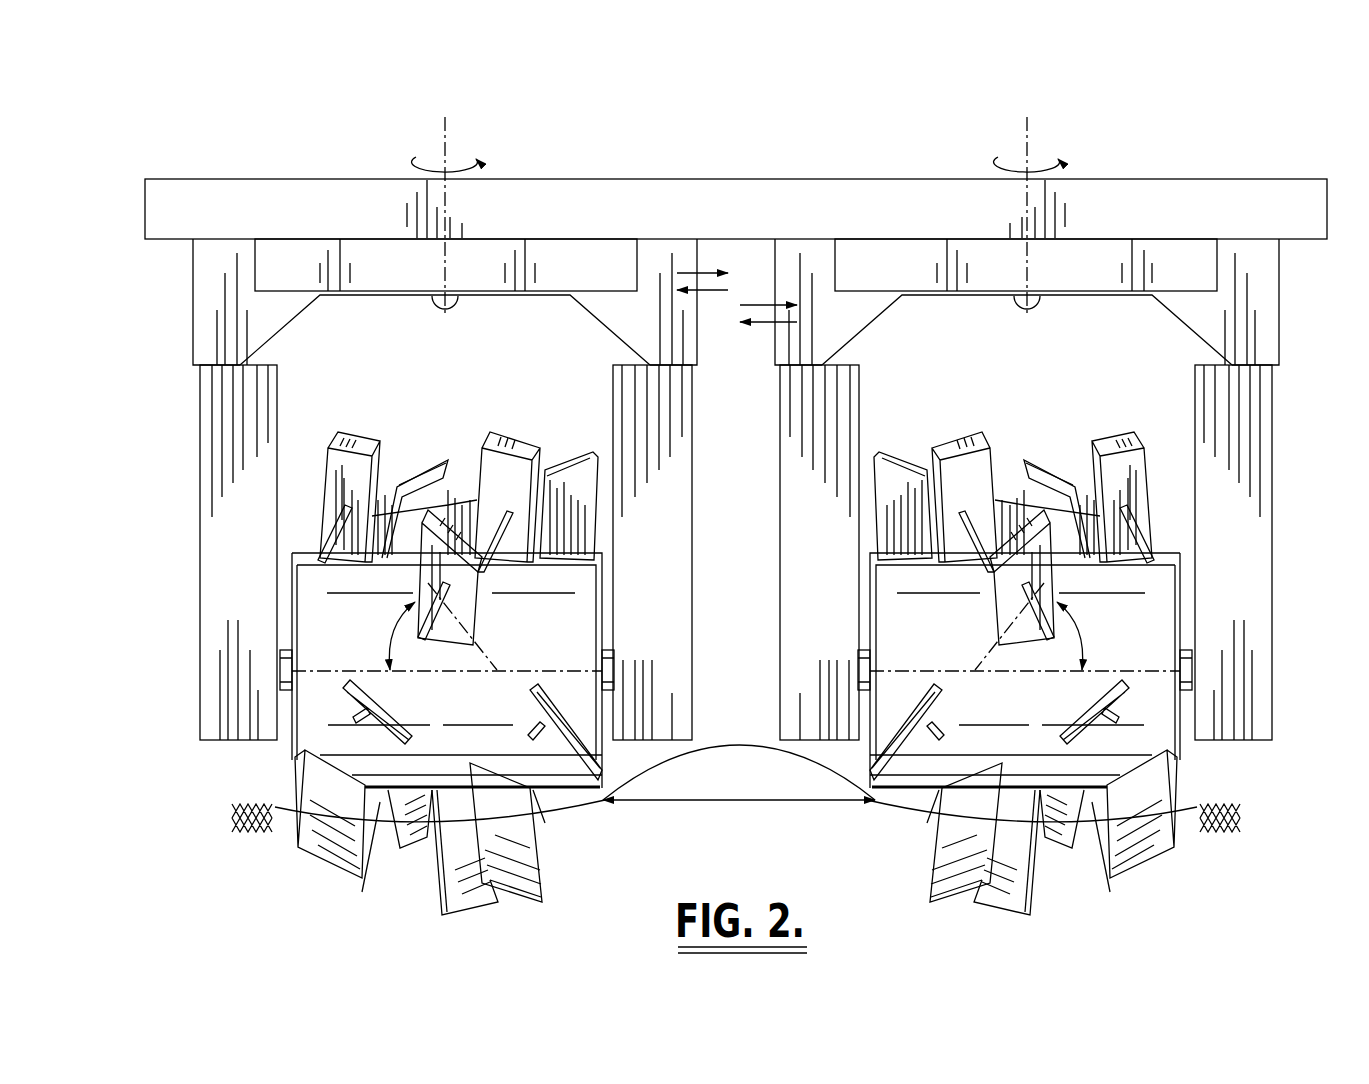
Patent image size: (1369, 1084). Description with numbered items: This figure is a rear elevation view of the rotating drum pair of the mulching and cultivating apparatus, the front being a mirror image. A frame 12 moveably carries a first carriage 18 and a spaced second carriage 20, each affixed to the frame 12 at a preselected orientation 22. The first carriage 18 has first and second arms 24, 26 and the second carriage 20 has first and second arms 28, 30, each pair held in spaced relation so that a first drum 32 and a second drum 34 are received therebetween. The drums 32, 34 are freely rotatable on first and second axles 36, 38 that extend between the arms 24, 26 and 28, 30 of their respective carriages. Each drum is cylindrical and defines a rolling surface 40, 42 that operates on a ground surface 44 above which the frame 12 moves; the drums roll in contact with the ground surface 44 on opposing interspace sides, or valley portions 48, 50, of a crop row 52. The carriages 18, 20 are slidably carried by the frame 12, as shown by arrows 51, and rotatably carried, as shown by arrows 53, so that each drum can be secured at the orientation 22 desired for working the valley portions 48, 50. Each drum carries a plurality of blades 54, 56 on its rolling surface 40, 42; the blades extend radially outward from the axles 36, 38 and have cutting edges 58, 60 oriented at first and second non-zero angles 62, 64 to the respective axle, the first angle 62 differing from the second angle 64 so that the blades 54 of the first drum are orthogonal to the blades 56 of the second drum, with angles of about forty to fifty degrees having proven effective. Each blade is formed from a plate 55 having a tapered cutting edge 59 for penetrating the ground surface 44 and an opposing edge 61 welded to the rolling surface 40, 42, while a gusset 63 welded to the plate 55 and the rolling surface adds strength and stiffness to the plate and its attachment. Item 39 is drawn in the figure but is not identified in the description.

The frame 12 is at (1260, 190).
The first carriage 18 is at (605, 257).
The second carriage 20 is at (1170, 253).
The preselected orientation 22 is at (823, 168).
The first arm 24 is at (213, 557).
The second arm 26 is at (797, 583).
The first arm 28 is at (680, 477).
The second arm 30 is at (1265, 553).
The first drum 32 is at (317, 697).
The second drum 34 is at (1140, 660).
The first axle 36 is at (280, 668).
The second axle 38 is at (1197, 688).
The fibers 39 is at (578, 447).
The rolling surface 40 is at (494, 701).
The rolling surface 42 is at (1034, 701).
The ground surface 44 is at (733, 727).
The valley portion 48 is at (362, 891).
The valley portion 50 is at (910, 793).
The arrows 51 is at (765, 312).
The crop row 52 is at (749, 742).
The arrows 53 is at (457, 140).
The blades 54 is at (427, 460).
The plate 55 is at (340, 477).
The blades 56 is at (1048, 455).
The cutting edge 58 is at (568, 460).
The tapered cutting edge 59 is at (313, 853).
The cutting edge 60 is at (953, 448).
The opposing edge 61 is at (515, 573).
The first non-zero angle 62 is at (393, 628).
The gusset 63 is at (318, 542).
The second non-zero angle 64 is at (1080, 628).